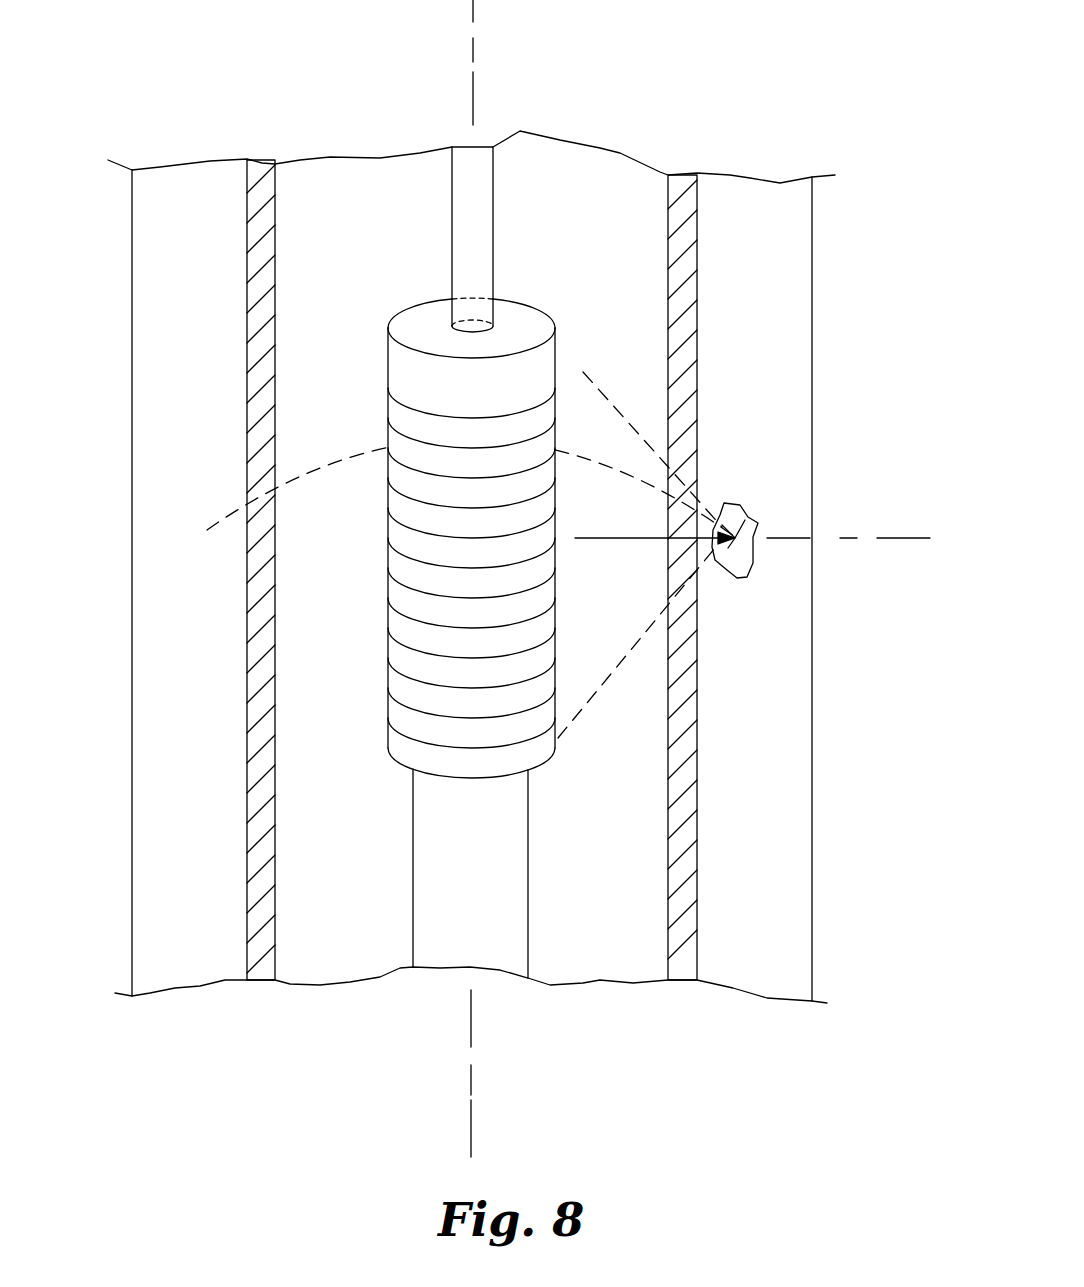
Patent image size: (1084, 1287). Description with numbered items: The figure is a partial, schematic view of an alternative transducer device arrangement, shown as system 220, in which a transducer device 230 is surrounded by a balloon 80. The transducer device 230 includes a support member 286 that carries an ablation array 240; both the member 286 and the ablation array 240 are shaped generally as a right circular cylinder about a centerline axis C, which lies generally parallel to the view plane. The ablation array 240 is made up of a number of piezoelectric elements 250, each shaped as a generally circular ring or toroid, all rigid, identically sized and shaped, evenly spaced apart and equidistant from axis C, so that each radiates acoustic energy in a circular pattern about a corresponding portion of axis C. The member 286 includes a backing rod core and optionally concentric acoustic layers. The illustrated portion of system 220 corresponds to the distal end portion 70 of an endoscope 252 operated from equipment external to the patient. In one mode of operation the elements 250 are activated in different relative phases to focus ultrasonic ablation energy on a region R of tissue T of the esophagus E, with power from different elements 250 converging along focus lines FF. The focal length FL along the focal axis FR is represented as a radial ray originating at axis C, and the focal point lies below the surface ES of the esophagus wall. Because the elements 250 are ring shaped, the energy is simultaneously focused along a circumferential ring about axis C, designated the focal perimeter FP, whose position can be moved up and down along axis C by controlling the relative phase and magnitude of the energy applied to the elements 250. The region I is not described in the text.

The system 220 is at (745, 1015).
The balloon 80 is at (247, 930).
The ablation array 240 is at (388, 322).
The transducer device 230 is at (475, 583).
The piezoelectric elements 250 is at (390, 558).
The distal end portion 70 is at (477, 873).
The endoscope 252 is at (413, 937).
The support member 286 is at (528, 897).
The centerline axis C is at (473, 3).
The esophagus E is at (132, 748).
The surface of the esophagus wall ES is at (247, 730).
The tissue T is at (196, 863).
The interior I is at (760, 320).
The focal perimeter FP is at (222, 497).
The focus lines FF is at (617, 418).
The focal length FL is at (590, 541).
The focal axis FR is at (870, 541).
The region R is at (750, 505).